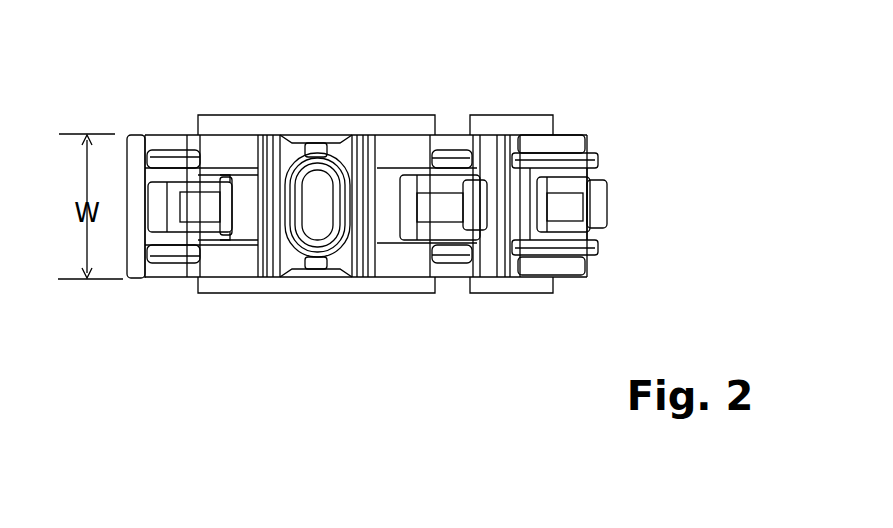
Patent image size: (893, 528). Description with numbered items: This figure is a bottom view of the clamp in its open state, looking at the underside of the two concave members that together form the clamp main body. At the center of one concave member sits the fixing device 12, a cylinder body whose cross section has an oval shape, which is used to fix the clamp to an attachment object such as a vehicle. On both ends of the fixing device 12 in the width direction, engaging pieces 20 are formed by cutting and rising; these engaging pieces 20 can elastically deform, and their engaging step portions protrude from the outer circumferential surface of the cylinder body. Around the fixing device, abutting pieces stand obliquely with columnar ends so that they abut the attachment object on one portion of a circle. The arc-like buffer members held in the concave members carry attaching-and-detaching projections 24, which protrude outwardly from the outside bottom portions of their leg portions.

The fixing device 12 is at (303, 167).
The engaging piece 20 is at (315, 265).
The attaching-and-detaching projection 24 is at (608, 205).